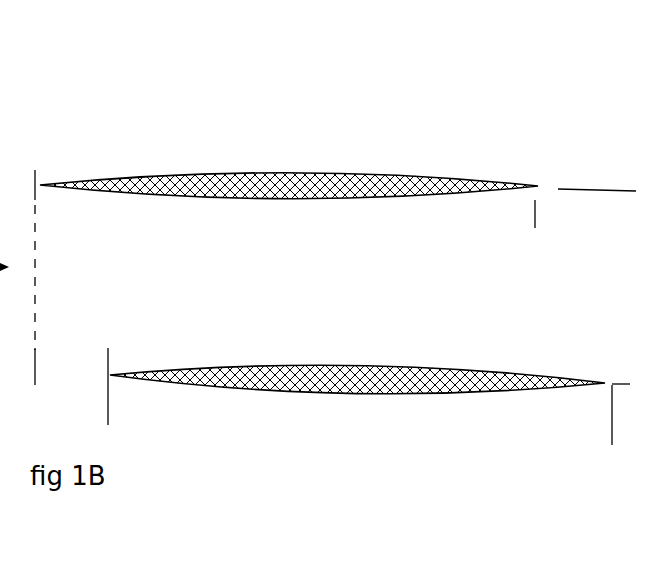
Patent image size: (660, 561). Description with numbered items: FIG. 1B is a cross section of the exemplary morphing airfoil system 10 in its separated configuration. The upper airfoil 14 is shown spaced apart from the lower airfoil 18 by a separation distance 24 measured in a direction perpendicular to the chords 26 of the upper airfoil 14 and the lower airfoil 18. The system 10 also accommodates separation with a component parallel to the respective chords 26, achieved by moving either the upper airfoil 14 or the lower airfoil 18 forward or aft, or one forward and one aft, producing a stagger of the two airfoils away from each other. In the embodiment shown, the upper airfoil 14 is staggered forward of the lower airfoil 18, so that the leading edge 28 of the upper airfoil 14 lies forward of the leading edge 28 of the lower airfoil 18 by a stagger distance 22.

The morphing airfoil system 10 is at (290, 103).
The upper airfoil 14 is at (389, 168).
The lower airfoil 18 is at (371, 366).
The stagger distance 22 is at (37, 368).
The separation distance 24 is at (627, 192).
The chords 26 is at (37, 215).
The leading edge 28 is at (36, 143).